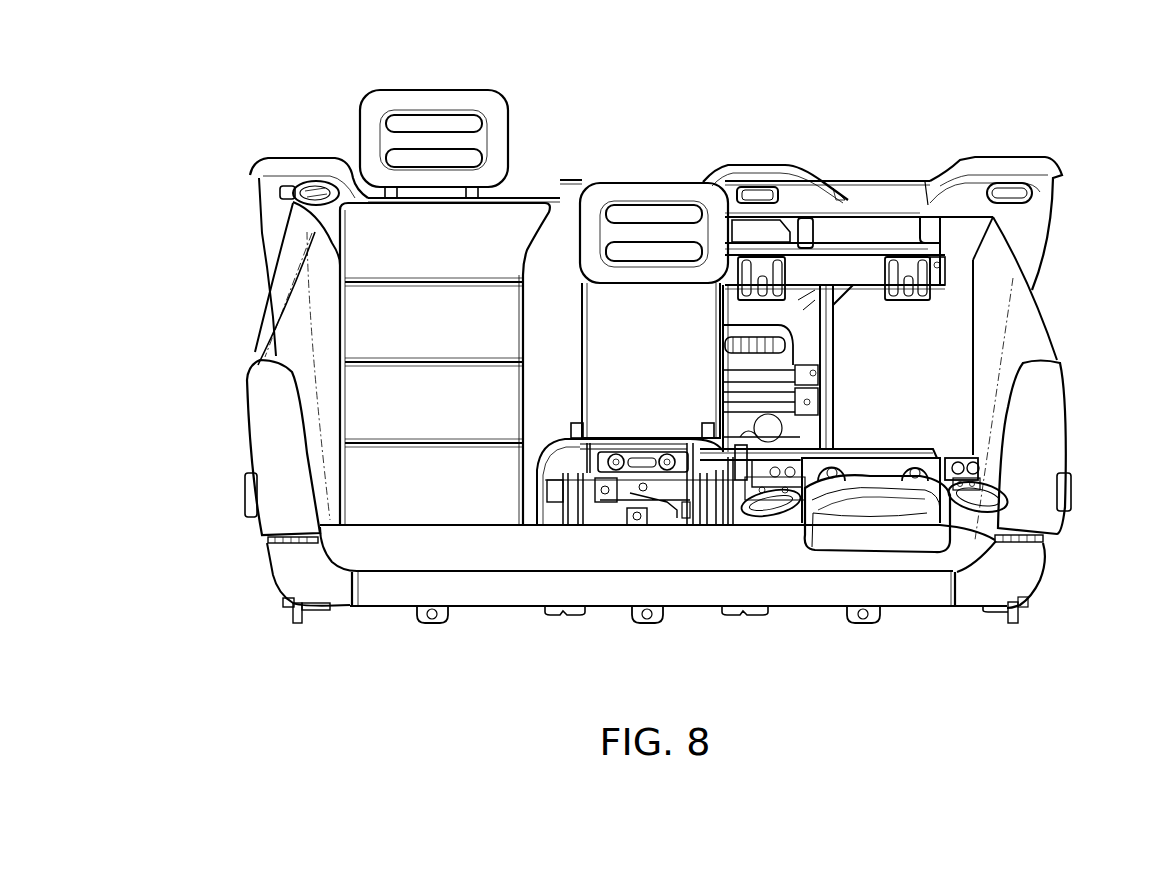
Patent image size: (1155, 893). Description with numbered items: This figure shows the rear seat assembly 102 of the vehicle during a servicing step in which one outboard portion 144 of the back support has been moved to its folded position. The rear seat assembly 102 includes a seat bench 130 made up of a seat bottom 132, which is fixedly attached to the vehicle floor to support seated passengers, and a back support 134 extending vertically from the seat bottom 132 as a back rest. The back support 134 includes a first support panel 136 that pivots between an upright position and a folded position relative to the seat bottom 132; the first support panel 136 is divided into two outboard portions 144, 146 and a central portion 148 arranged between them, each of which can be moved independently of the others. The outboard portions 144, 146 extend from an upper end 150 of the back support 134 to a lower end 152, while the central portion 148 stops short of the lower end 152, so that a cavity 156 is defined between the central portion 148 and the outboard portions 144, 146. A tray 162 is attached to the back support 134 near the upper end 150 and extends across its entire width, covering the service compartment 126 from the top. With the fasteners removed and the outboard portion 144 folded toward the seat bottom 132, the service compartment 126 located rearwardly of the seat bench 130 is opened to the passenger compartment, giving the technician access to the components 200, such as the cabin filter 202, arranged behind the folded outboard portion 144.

The rear seat assembly 102 is at (352, 84).
The service compartment 126 is at (884, 364).
The seat bench 130 is at (744, 592).
The seat bottom 132 is at (492, 587).
The back support 134 is at (383, 376).
The first support panel 136 is at (383, 455).
The outboard portion 144 is at (873, 532).
The outboard portion 146 is at (363, 263).
The central portion 148 is at (660, 313).
The upper end 150 is at (305, 206).
The lower end 152 is at (433, 527).
The cavity 156 is at (620, 502).
The tray 162 is at (897, 192).
The components 200 is at (758, 378).
The cabin filter 202 is at (734, 378).